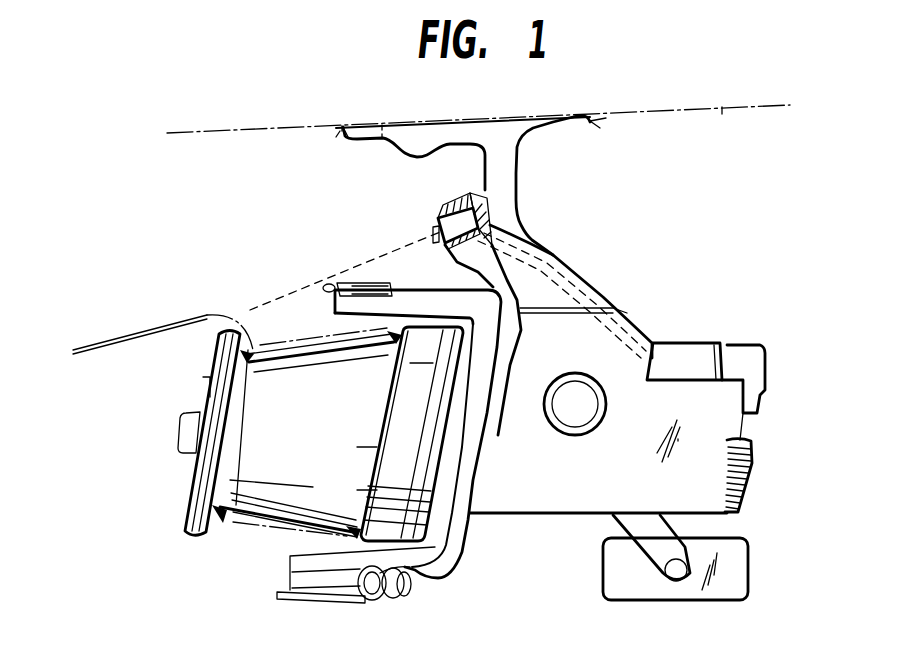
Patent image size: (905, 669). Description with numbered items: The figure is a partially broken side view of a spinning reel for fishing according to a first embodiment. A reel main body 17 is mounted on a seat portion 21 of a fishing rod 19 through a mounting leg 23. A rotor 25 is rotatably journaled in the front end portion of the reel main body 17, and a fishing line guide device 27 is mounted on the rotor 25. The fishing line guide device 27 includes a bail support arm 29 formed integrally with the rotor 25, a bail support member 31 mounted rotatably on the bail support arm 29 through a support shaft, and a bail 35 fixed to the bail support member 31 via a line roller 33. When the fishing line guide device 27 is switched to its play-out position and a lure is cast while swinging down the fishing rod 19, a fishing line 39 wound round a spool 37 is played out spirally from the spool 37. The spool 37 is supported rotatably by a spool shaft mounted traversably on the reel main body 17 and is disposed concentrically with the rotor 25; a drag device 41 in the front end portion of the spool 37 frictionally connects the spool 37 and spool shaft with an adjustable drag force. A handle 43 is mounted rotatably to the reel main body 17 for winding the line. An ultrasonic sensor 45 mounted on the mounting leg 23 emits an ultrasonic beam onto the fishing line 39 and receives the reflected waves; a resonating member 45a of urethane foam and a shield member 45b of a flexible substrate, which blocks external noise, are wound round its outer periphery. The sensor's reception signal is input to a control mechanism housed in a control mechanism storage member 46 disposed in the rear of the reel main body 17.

The reel main body 17 is at (587, 317).
The fishing rod 19 is at (722, 110).
The seat portion 21 is at (347, 133).
The mounting leg 23 is at (512, 169).
The rotor 25 is at (467, 537).
The fishing line guide device 27 is at (268, 578).
The bail support arm 29 is at (293, 562).
The bail support member 31 is at (383, 603).
The line roller 33 is at (452, 577).
The bail 35 is at (330, 290).
The spool 37 is at (238, 477).
The fishing line 39 is at (104, 342).
The drag device 41 is at (203, 402).
The handle 43 is at (667, 535).
The ultrasonic sensor 45 is at (450, 245).
The resonating member 45a is at (436, 220).
The shield member 45b is at (441, 208).
The control mechanism storage member 46 is at (676, 350).